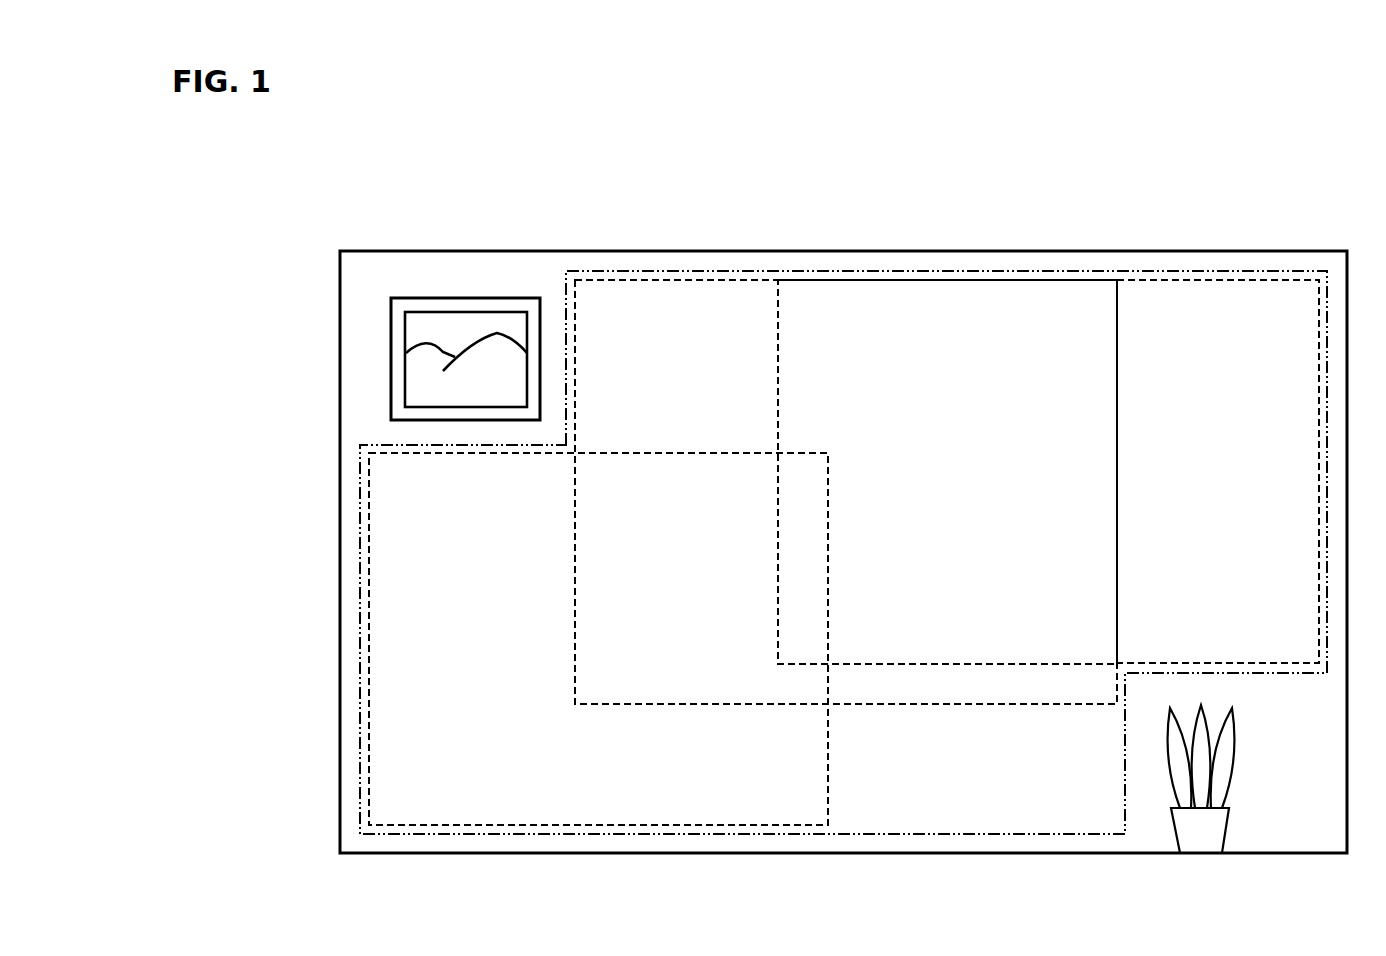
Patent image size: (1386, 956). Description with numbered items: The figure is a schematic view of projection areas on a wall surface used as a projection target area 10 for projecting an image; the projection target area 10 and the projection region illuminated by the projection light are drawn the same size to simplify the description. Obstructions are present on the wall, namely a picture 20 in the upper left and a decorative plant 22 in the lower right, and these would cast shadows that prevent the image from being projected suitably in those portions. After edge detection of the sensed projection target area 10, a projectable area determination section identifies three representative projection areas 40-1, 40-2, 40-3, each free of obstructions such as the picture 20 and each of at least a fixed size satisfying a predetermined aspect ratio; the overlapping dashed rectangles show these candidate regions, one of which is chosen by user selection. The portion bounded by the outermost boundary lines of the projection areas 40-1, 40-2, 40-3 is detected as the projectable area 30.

The projection target area 10 is at (1229, 251).
The picture 20 is at (420, 298).
The decorative plant 22 is at (1201, 845).
The projectable area 30 is at (1057, 270).
The projection area 40-1 is at (368, 518).
The projection area 40-2 is at (668, 280).
The projection area 40-3 is at (1290, 280).